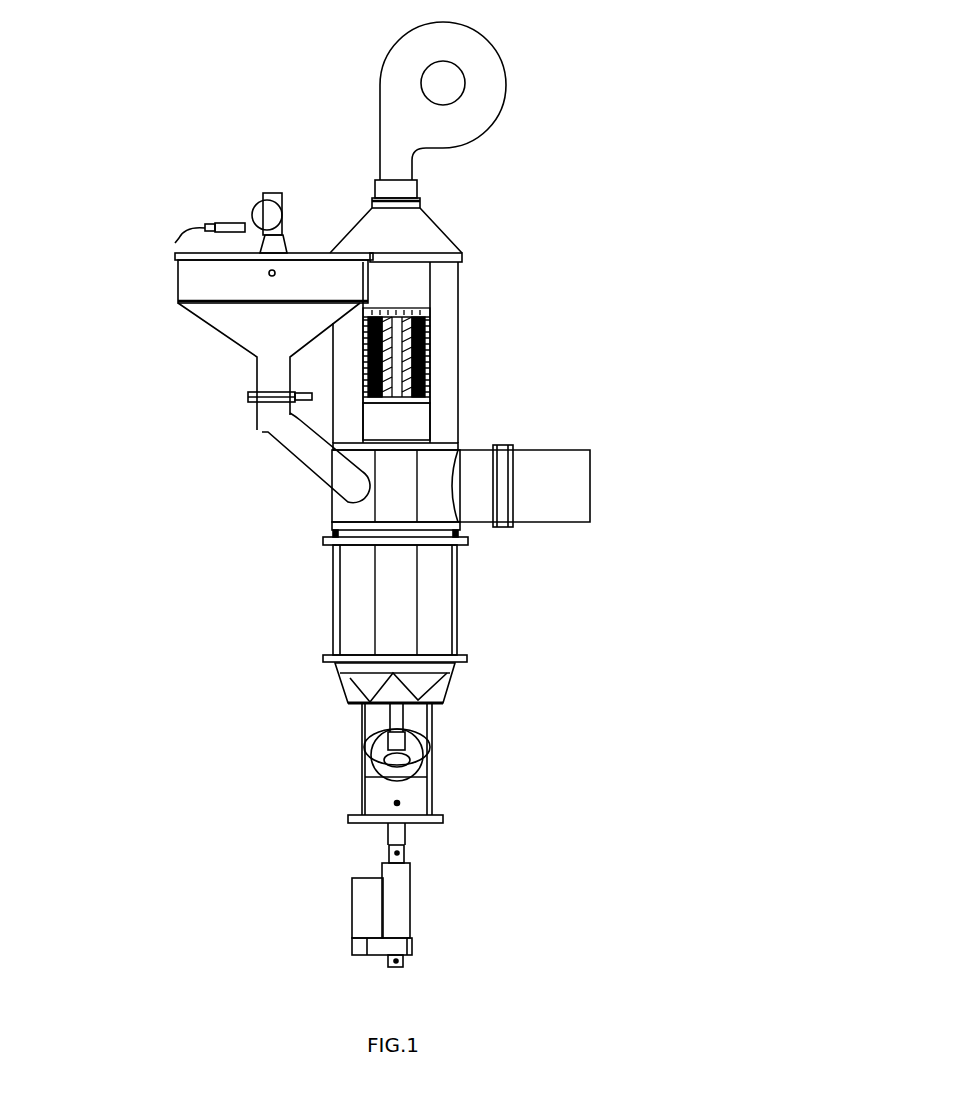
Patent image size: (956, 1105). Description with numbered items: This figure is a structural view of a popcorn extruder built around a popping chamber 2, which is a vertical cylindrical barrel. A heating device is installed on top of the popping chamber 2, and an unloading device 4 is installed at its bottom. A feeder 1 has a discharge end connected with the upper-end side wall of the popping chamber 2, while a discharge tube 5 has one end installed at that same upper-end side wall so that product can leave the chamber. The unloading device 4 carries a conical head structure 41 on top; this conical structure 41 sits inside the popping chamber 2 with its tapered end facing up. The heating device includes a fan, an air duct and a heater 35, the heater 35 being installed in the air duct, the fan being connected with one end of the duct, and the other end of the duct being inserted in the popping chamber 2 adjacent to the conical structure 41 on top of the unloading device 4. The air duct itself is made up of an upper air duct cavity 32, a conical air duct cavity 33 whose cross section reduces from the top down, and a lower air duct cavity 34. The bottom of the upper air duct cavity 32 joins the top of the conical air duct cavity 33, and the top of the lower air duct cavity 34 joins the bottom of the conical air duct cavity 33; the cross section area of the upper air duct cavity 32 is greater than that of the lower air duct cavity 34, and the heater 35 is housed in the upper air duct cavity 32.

The feeder 1 is at (267, 430).
The popping chamber 2 is at (345, 600).
The unloading device 4 is at (385, 758).
The discharge tube 5 is at (570, 490).
The upper air duct cavity 32 is at (410, 427).
The conical air duct cavity 33 is at (343, 452).
The lower air duct cavity 34 is at (383, 580).
The heater 35 is at (430, 330).
The conical head structure 41 is at (393, 688).